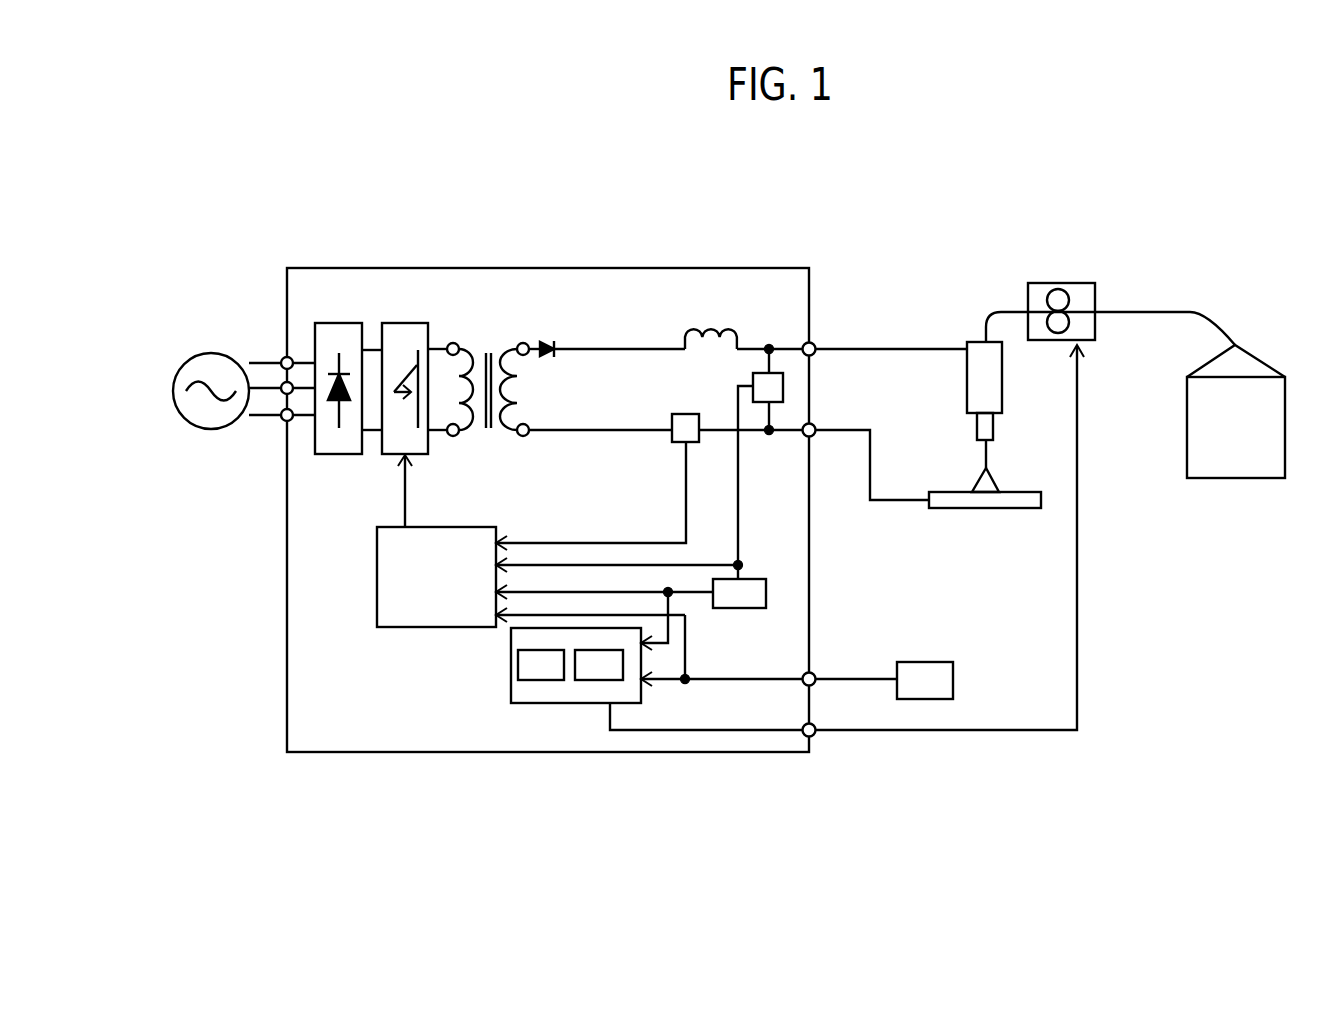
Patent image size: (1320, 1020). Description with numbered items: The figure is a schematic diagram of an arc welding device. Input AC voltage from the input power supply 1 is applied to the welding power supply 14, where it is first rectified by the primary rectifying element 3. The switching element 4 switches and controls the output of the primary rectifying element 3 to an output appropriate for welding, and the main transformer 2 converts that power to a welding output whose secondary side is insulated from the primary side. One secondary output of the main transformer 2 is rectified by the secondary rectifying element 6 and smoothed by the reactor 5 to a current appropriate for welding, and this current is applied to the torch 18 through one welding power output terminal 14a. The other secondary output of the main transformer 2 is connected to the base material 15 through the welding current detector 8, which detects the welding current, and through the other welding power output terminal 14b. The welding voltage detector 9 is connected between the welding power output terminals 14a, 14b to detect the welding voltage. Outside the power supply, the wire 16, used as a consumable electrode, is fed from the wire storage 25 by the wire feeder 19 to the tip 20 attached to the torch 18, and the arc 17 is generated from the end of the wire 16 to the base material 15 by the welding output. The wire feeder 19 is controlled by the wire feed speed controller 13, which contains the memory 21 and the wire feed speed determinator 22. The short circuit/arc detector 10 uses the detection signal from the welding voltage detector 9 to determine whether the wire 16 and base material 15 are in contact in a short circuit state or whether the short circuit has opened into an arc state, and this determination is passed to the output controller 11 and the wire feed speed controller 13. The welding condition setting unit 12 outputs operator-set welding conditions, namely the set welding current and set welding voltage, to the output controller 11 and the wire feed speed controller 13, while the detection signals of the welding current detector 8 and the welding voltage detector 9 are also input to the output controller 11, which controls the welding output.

The input power supply 1 is at (197, 340).
The main transformer 2 is at (480, 333).
The primary rectifying element 3 is at (325, 322).
The switching element 4 is at (399, 322).
The reactor 5 is at (717, 325).
The secondary rectifying element 6 is at (533, 336).
The welding current detector 8 is at (678, 413).
The welding voltage detector 9 is at (781, 372).
The short circuit/arc detector 10 is at (766, 590).
The output controller 11 is at (403, 628).
The welding condition setting unit 12 is at (935, 699).
The wire feed speed controller 13 is at (633, 722).
The welding power supply 14 is at (287, 642).
The welding power output terminal 14a is at (814, 343).
The welding power output terminal 14b is at (815, 440).
The base material 15 is at (995, 508).
The wire 16 is at (983, 455).
The arc 17 is at (975, 483).
The torch 18 is at (967, 387).
The wire feeder 19 is at (1047, 283).
The tip 20 is at (977, 422).
The memory 21 is at (545, 680).
The wire feed speed determinator 22 is at (596, 680).
The wire storage 25 is at (1245, 480).